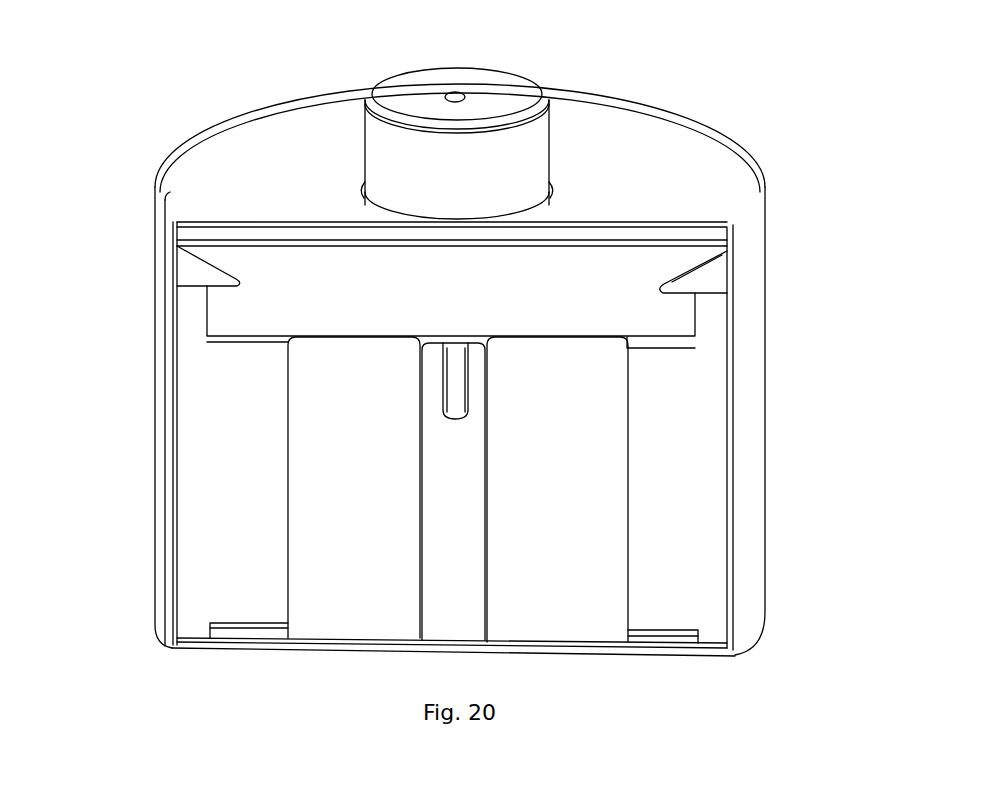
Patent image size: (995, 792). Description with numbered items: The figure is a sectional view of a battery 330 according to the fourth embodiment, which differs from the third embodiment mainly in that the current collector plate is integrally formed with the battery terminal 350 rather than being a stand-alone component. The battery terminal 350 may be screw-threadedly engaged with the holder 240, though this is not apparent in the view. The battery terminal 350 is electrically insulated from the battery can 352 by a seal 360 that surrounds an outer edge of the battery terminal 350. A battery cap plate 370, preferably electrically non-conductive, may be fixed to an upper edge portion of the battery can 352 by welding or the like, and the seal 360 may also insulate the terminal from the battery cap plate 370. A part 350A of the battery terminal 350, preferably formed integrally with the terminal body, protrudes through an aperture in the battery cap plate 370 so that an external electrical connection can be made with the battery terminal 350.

The battery 330 is at (135, 330).
The battery can 352 is at (162, 445).
The battery cap plate 370 is at (292, 173).
The part of the battery terminal 350A is at (505, 88).
The battery terminal 350 is at (392, 300).
The seal 360 is at (706, 280).
The holder 240 is at (235, 425).